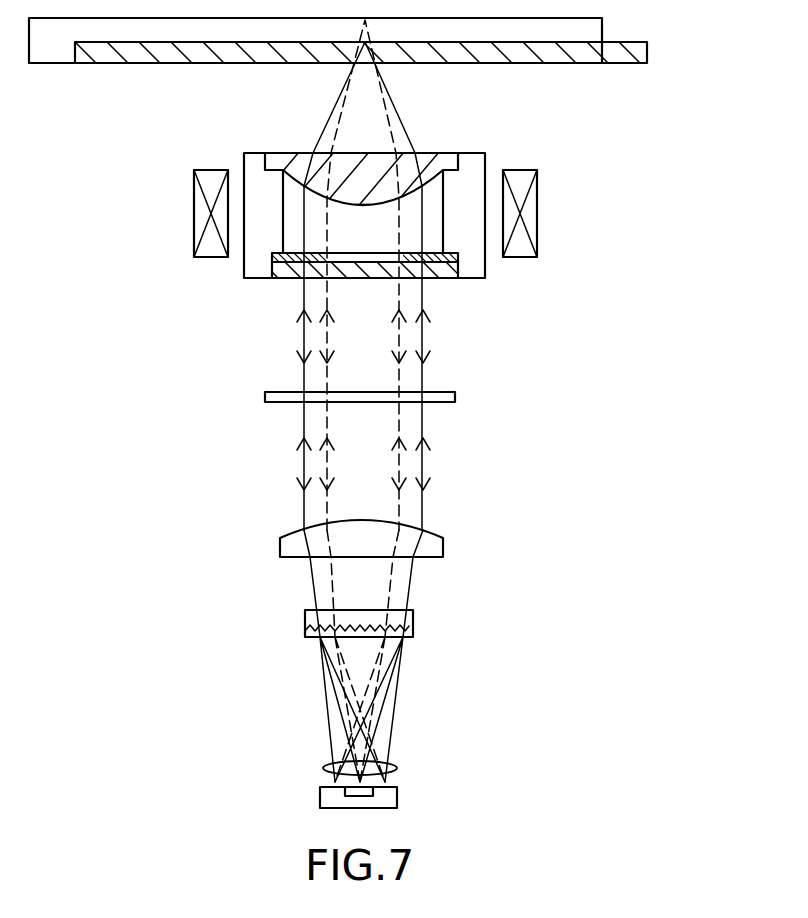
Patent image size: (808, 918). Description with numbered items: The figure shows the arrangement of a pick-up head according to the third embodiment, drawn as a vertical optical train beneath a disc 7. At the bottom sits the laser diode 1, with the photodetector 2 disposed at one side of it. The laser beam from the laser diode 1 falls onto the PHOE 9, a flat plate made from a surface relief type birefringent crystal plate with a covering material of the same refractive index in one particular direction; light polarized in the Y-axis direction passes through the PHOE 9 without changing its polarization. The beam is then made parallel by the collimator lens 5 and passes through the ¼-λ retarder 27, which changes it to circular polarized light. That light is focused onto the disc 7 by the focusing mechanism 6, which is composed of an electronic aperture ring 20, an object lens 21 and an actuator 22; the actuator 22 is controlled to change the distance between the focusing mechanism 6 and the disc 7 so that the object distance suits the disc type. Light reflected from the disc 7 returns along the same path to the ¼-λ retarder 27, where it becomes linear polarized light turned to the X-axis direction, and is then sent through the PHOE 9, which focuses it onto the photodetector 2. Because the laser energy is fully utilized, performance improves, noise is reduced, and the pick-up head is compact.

The laser diode 1 is at (387, 760).
The photodetector 2 is at (332, 805).
The collimator lens 5 is at (427, 546).
The focusing mechanism 6 is at (498, 162).
The disc 7 is at (660, 57).
The PHOE 9 is at (305, 628).
The electronic aperture ring 20 is at (422, 270).
The object lens 21 is at (395, 187).
The actuator 22 is at (210, 218).
The ¼-λ retarder 27 is at (278, 397).